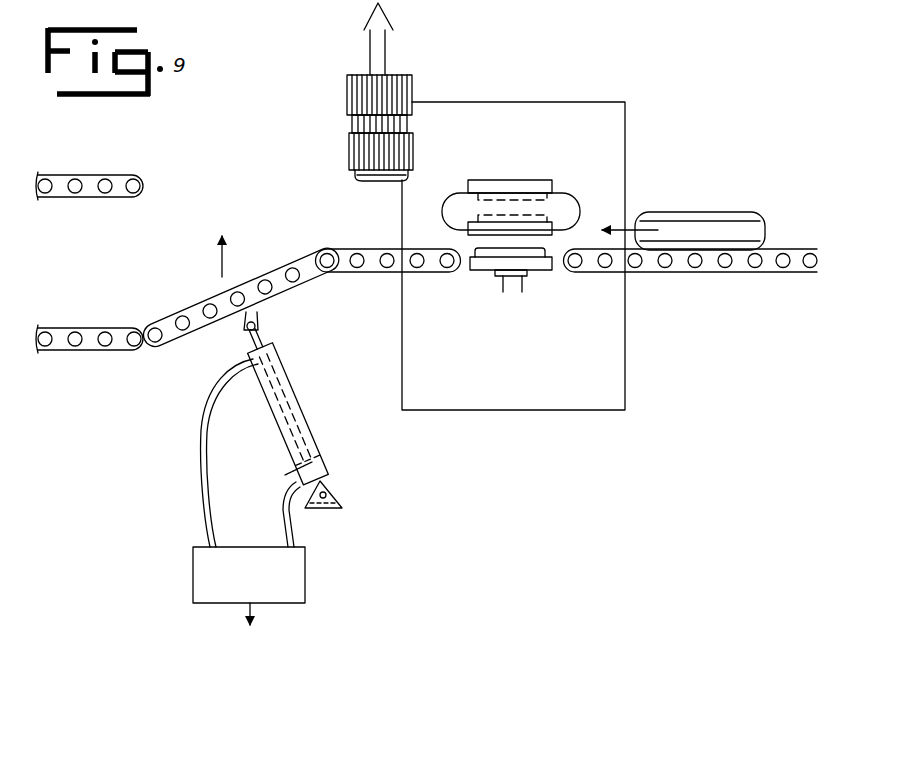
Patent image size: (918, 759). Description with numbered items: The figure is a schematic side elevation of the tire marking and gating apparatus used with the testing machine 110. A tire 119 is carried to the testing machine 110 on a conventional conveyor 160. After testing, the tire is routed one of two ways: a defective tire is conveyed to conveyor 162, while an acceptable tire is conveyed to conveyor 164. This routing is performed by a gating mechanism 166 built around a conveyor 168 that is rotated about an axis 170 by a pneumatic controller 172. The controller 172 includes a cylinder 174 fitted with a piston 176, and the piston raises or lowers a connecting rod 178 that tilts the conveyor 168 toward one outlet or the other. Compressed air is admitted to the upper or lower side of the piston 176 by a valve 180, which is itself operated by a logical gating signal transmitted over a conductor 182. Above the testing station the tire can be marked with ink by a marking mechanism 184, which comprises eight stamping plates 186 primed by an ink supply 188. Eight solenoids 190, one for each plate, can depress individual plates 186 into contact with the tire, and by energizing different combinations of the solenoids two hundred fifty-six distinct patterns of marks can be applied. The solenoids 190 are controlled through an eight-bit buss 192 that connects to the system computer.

The testing machine 110 is at (580, 87).
The container 119 is at (710, 212).
The conveyor 160 is at (721, 282).
The conveyor 162 is at (90, 351).
The conveyor 164 is at (97, 175).
The gating mechanism 166 is at (223, 172).
The conveyor 168 is at (218, 297).
The axis 170 is at (333, 250).
The pneumatic controller 172 is at (193, 447).
The cylinder 174 is at (300, 410).
The piston 176 is at (293, 458).
The connecting rod 178 is at (285, 407).
The valve 180 is at (193, 560).
The conductor 182 is at (245, 612).
The marking mechanism 184 is at (388, 102).
The stamping plates 186 is at (346, 147).
The ink supply 188 is at (356, 173).
The solenoids 190 is at (415, 88).
The 8-bit buss 192 is at (388, 42).